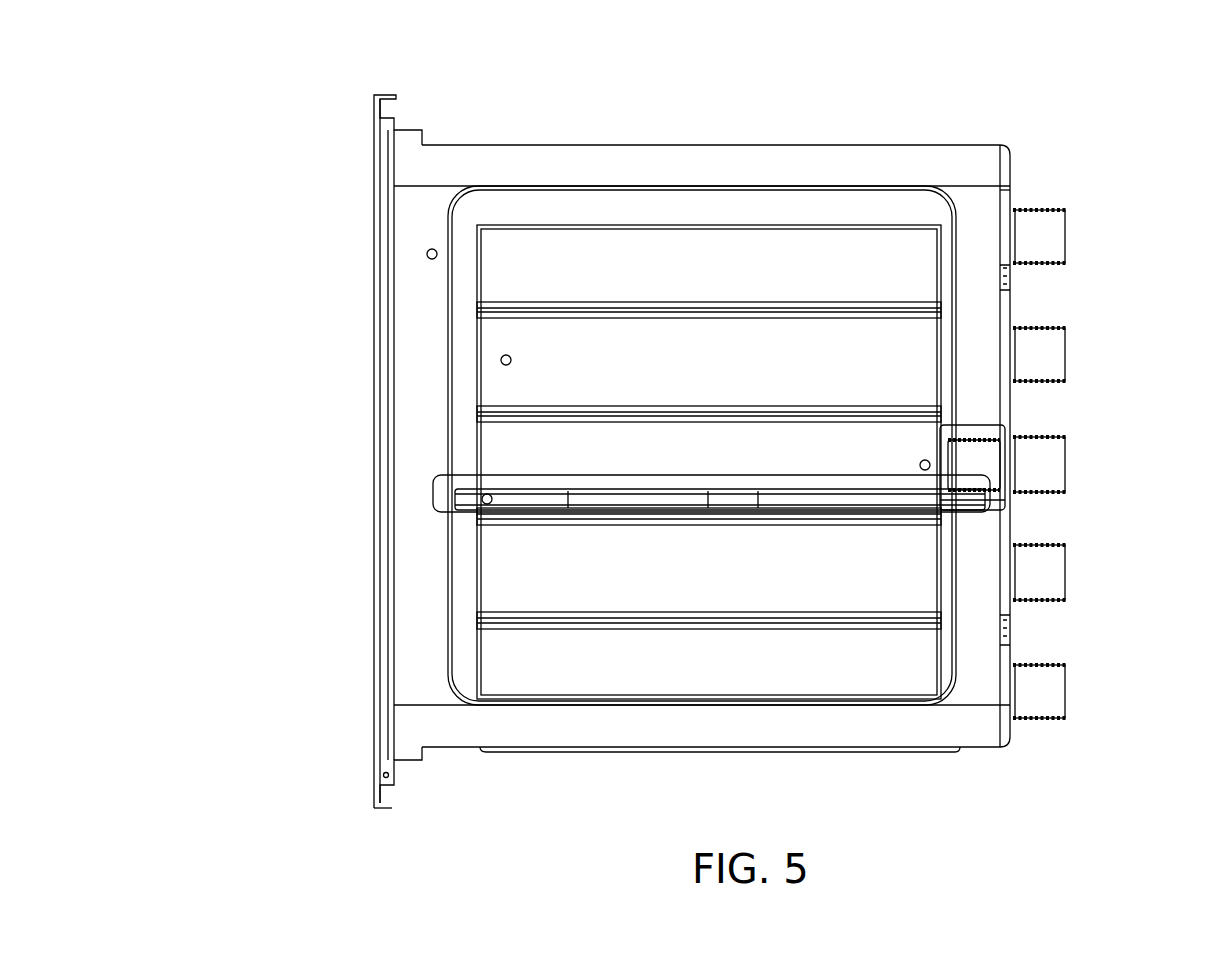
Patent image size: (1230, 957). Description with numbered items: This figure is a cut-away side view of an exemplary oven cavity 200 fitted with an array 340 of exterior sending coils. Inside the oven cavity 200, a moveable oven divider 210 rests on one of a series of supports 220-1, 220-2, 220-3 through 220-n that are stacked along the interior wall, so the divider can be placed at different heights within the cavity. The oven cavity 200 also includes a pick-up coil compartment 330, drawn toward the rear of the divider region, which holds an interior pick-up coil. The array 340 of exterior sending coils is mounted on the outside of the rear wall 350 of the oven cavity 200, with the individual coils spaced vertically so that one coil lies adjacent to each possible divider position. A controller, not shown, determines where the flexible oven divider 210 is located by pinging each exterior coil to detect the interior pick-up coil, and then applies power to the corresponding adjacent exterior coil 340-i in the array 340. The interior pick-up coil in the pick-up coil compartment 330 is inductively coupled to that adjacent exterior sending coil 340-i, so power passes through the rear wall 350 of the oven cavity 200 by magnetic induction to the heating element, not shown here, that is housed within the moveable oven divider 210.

The oven cavity 200 is at (222, 104).
The moveable oven divider 210 is at (765, 475).
The support 220-1 is at (584, 311).
The support 220-2 is at (585, 412).
The support 220-3 is at (597, 517).
The support 220-n is at (585, 622).
The pick-up coil compartment 330 is at (977, 465).
The array of exterior sending coils 340 is at (1075, 203).
The exterior sending coil 340-i is at (1048, 462).
The rear wall 350 is at (987, 200).